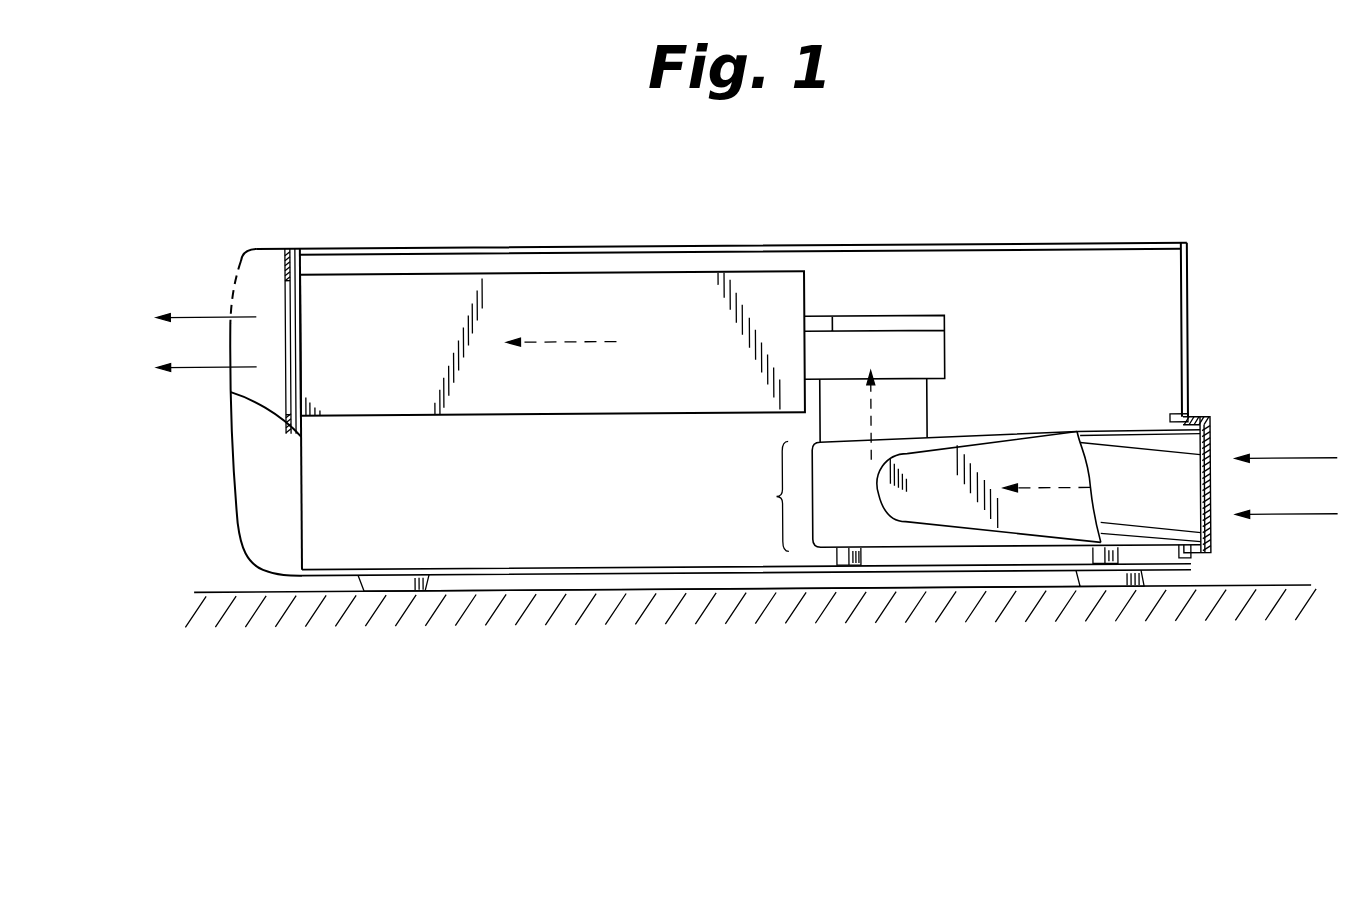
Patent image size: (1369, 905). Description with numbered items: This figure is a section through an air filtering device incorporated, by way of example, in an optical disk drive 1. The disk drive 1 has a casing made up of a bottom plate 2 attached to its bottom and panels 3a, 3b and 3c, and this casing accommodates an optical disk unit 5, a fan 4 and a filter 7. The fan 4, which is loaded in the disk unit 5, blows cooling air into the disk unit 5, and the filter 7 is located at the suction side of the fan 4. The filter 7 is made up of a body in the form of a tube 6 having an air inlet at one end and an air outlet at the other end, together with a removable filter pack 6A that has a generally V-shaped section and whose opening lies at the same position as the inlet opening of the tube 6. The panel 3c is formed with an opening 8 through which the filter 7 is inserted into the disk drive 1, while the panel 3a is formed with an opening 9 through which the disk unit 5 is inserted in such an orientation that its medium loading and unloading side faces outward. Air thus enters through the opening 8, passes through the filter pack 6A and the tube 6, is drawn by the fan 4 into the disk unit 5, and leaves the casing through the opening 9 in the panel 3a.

The optical disk drive 1 is at (270, 571).
The bottom plate 2 is at (458, 566).
The panel 3a is at (232, 477).
The panel 3b is at (615, 247).
The panel 3c is at (1188, 303).
The fan 4 is at (866, 317).
The optical disk unit 5 is at (511, 287).
The tube 6 is at (876, 548).
The filter pack 6A is at (1150, 517).
The filter 7 is at (974, 491).
The opening 8 is at (1197, 421).
The opening 9 is at (286, 275).